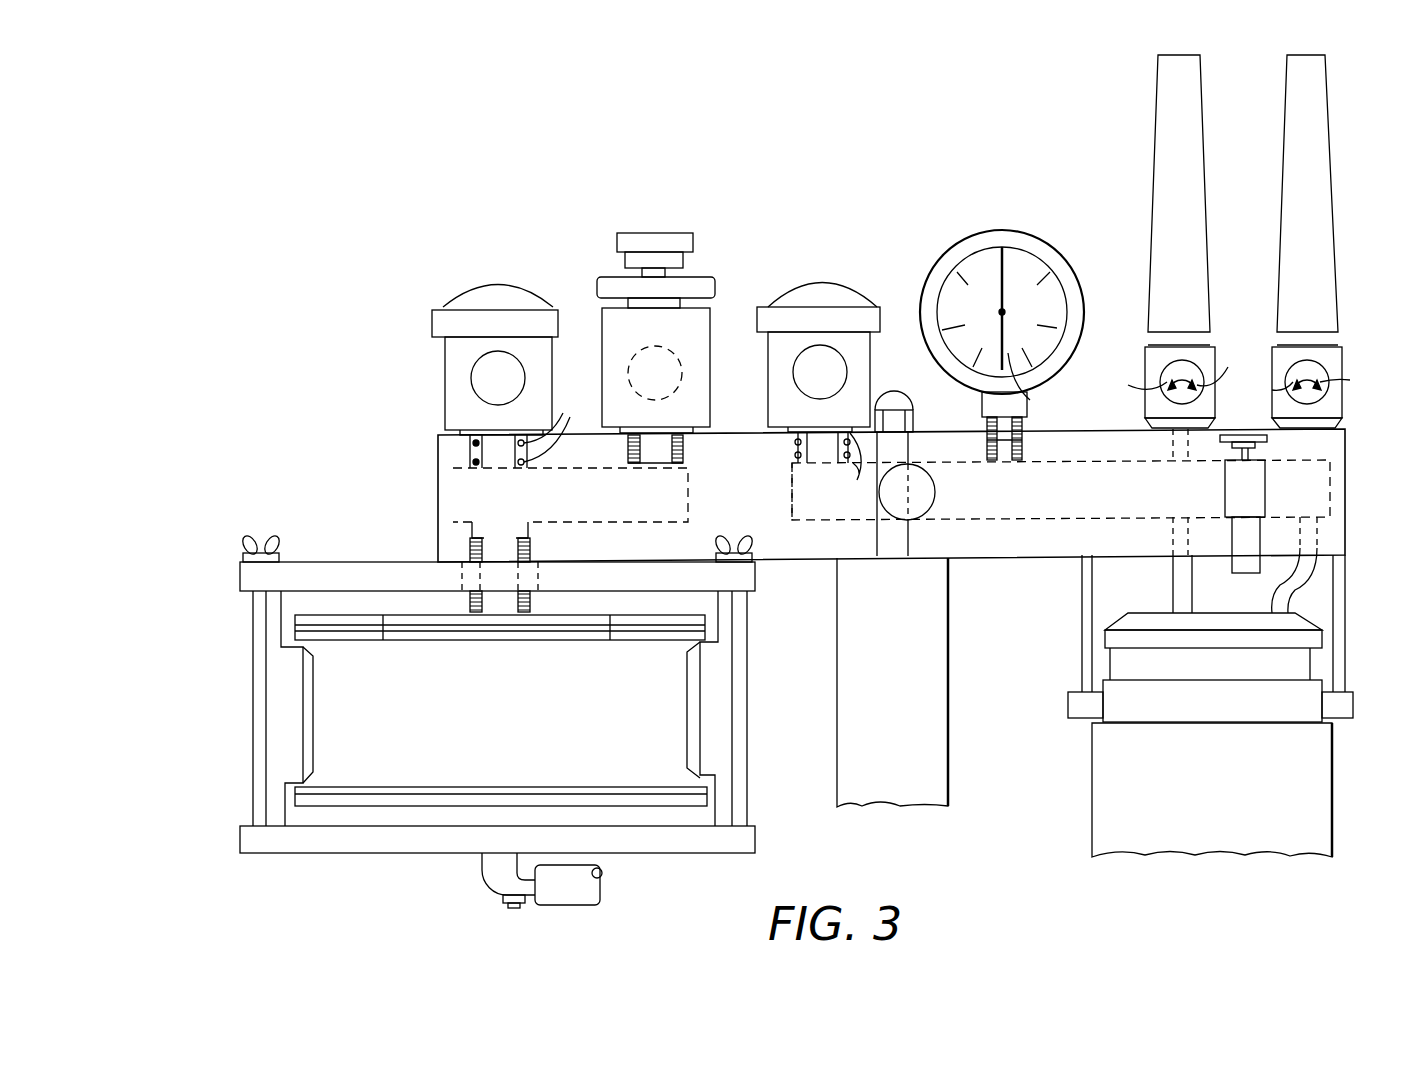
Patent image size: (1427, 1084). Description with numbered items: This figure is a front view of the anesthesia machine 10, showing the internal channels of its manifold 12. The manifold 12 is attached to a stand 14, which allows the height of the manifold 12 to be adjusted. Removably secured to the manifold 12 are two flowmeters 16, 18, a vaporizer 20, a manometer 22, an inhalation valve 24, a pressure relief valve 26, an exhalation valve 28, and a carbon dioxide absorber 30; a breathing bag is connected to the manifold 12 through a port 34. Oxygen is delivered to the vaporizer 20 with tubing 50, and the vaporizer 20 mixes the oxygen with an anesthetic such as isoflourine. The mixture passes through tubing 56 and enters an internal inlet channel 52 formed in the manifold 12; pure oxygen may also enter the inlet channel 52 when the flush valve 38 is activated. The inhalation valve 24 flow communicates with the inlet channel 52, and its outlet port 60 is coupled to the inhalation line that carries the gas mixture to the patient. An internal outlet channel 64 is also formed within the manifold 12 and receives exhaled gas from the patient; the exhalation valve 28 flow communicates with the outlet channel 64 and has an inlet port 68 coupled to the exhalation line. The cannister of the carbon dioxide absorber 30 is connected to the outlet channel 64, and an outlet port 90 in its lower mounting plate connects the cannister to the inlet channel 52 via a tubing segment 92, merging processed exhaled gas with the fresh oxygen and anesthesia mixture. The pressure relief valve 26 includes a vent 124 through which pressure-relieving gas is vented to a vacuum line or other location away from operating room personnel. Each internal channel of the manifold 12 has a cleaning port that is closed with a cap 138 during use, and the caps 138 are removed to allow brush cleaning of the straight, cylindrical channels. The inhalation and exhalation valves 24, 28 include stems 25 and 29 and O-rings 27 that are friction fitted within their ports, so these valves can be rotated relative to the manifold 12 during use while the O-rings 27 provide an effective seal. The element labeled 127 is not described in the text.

The anesthesia machine 10 is at (540, 190).
The manifold 12 is at (1347, 437).
The stand 14 is at (836, 717).
The flowmeter 16 is at (1158, 72).
The flowmeter 18 is at (1315, 70).
The vaporizer 20 is at (1332, 792).
The manometer 22 is at (1028, 232).
The inhalation valve 24 is at (875, 300).
The stem 25 is at (796, 445).
The pressure relief valve 26 is at (657, 233).
The O-ring 27 is at (841, 471).
The exhalation valve 28 is at (488, 283).
The stem 29 is at (470, 452).
The carbon dioxide absorber 30 is at (244, 640).
The port 34 is at (937, 490).
The flush valve 38 is at (1225, 480).
The tubing 50 is at (1173, 592).
The internal inlet channel 52 is at (790, 492).
The tubing 56 is at (1272, 597).
The outlet port 60 is at (842, 370).
The internal outlet channel 64 is at (457, 502).
The inlet port 68 is at (470, 375).
The outlet port 90 is at (478, 867).
The tubing segment 92 is at (603, 887).
The vent 124 is at (673, 355).
The tube 127 is at (559, 426).
The cap 138 is at (443, 480).